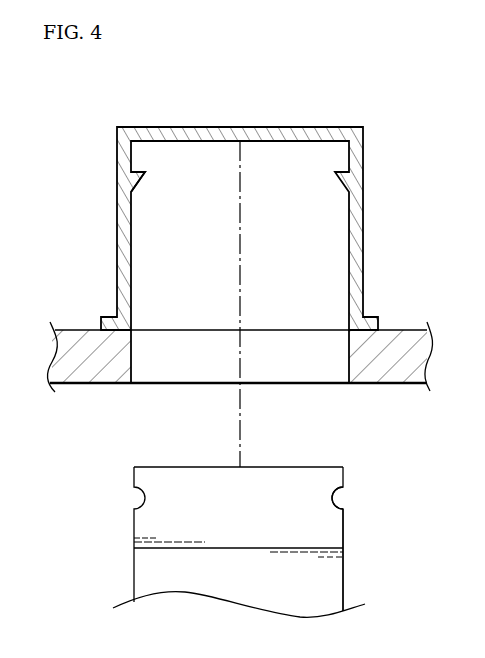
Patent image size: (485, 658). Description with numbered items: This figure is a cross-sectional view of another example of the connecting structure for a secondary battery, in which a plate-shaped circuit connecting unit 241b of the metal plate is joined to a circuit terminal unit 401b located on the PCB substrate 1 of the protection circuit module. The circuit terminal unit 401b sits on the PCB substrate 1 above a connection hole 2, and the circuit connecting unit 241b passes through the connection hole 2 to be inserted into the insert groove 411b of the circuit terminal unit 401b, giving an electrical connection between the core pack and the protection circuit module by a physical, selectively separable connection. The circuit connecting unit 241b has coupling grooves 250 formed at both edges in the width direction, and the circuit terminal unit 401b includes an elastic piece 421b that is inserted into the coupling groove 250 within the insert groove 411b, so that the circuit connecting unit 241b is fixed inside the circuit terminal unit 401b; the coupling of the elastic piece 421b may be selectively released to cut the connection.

The circuit terminal unit 401b is at (277, 224).
The insert groove 411b is at (293, 157).
The elastic piece 421b is at (131, 166).
The PCB substrate 1 is at (412, 340).
The connection hole 2 is at (315, 372).
The coupling groove 250 is at (345, 497).
The circuit connecting unit 241b is at (342, 527).